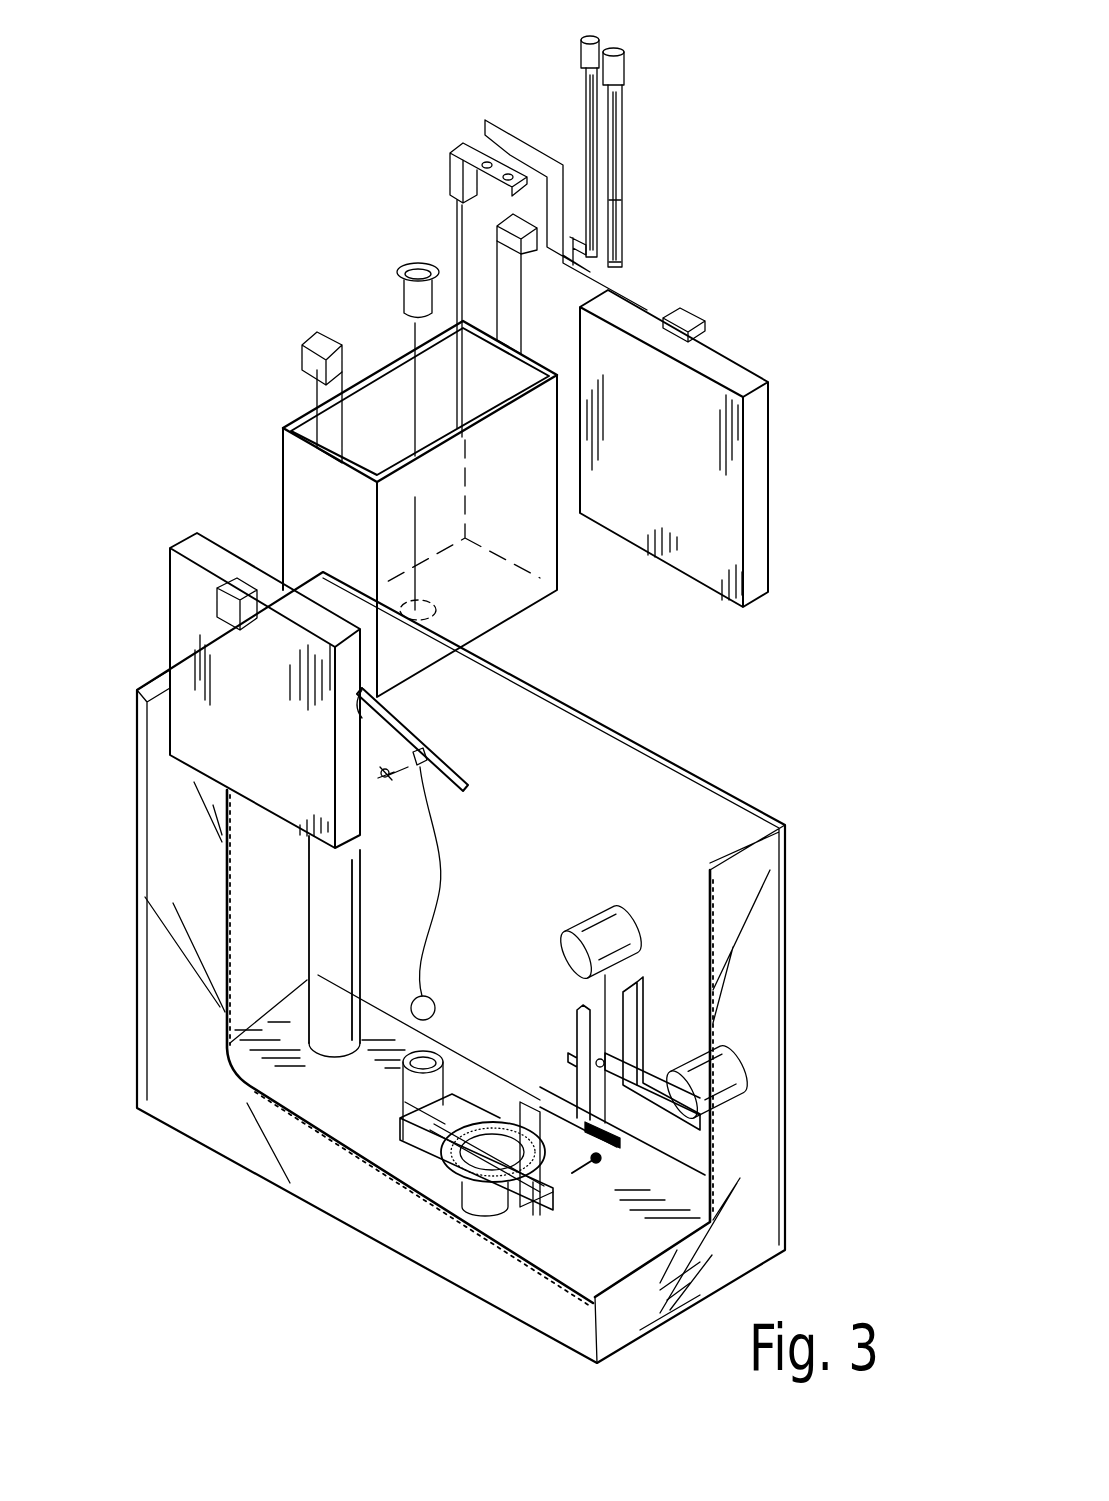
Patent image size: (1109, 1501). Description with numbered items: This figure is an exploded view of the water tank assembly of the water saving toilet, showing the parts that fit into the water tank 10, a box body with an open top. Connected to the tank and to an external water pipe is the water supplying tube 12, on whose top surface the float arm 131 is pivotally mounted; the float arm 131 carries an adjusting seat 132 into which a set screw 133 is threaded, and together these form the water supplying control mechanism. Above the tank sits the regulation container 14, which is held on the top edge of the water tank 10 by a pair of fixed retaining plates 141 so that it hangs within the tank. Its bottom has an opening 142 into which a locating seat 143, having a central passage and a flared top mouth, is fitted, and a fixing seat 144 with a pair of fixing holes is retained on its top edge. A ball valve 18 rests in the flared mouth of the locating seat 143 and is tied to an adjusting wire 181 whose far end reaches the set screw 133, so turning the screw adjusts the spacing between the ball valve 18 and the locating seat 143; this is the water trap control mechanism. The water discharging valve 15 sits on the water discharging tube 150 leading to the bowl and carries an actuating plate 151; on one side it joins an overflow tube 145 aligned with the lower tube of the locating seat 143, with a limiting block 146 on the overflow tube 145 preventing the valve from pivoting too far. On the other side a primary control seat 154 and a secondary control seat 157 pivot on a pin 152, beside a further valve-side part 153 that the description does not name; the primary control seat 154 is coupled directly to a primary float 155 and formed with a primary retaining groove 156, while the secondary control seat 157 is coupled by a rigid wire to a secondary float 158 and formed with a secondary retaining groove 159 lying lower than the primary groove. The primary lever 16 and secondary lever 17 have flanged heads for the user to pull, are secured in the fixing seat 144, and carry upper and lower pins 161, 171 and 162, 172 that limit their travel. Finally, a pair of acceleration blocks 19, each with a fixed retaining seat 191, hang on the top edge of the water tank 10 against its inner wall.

The water tank 10 is at (785, 873).
The water supplying tube 12 is at (317, 953).
The regulation container 14 is at (292, 453).
The water discharging valve 15 is at (460, 1165).
The primary lever 16 is at (620, 52).
The secondary lever 17 is at (588, 38).
The ball valve 18 is at (435, 1002).
The acceleration blocks 19 is at (178, 568).
The float arm 131 is at (453, 763).
The adjusting seat 132 is at (420, 752).
The set screw 133 is at (387, 780).
The fixed retaining plates 141 is at (322, 387).
The opening 142 is at (434, 603).
The locating seat 143 is at (397, 294).
The fixing seat 144 is at (462, 156).
The overflow tube 145 is at (400, 1097).
The limiting block 146 is at (440, 1150).
The water discharging tube 150 is at (485, 1197).
The actuating plate 151 is at (472, 1190).
The pin 152 is at (600, 1143).
The side plate 153 is at (513, 1187).
The primary control seat 154 is at (610, 1143).
The primary float 155 is at (747, 1083).
The primary retaining groove 156 is at (634, 963).
The secondary control seat 157 is at (600, 1160).
The secondary float 158 is at (641, 928).
The secondary retaining groove 159 is at (578, 1038).
The upper pin 161 is at (621, 205).
The lower pin 162 is at (621, 272).
The upper pin 171 is at (577, 182).
The lower pin 172 is at (579, 267).
The adjusting wire 181 is at (443, 883).
The fixed retaining seat 191 is at (228, 606).